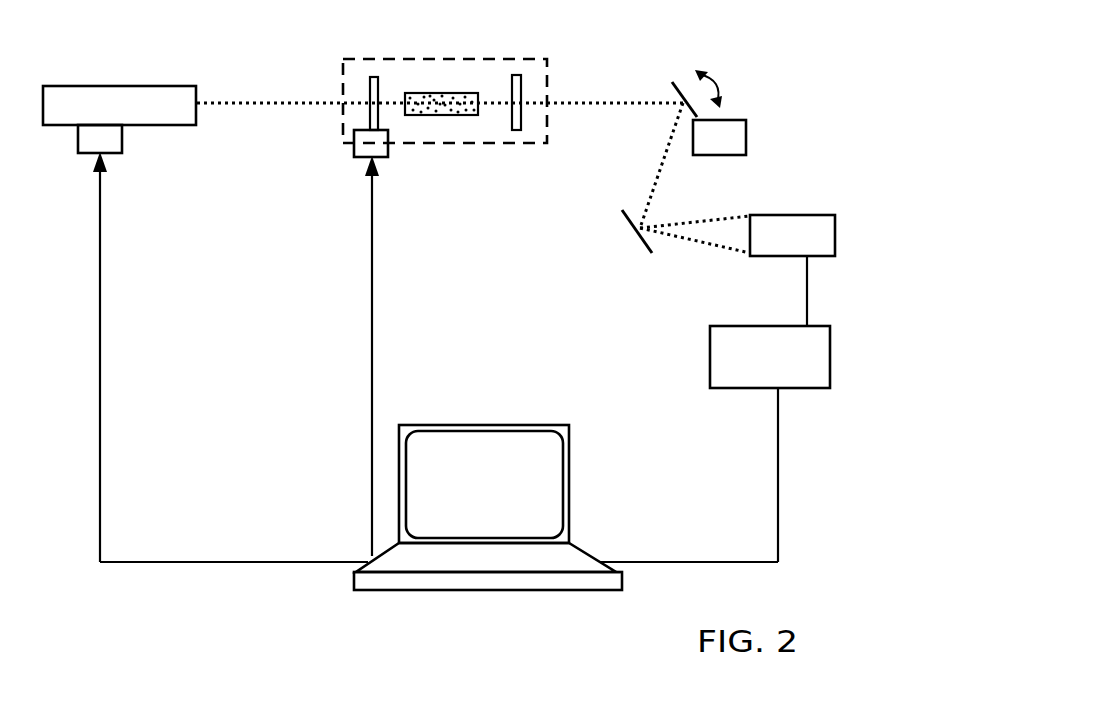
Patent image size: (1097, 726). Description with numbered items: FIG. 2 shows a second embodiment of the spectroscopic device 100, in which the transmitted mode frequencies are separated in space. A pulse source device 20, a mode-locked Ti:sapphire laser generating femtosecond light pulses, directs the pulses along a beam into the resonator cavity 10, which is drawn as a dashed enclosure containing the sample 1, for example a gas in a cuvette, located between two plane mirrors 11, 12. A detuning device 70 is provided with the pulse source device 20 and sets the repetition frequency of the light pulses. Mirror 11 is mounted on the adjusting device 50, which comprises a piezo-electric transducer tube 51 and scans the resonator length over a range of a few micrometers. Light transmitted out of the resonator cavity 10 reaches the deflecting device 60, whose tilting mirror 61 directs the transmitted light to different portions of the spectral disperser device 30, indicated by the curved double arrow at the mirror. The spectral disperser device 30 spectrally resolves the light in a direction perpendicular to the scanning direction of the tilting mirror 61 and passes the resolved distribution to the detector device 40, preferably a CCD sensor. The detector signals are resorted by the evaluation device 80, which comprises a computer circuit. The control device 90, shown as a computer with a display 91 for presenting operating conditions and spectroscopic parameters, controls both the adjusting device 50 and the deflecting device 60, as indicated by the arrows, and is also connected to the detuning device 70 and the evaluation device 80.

The sample 1 is at (460, 92).
The resonator cavity 10 is at (413, 68).
The mirror 11 is at (372, 103).
The mirror 12 is at (520, 120).
The pulse source device 20 is at (78, 121).
The spectral disperser device 30 is at (630, 261).
The detector device 40 is at (786, 250).
The adjusting device 50 is at (352, 192).
The piezo-electric transducer tube 51 is at (390, 150).
The deflecting device 60 is at (681, 71).
The tilting mirror 61 is at (720, 138).
The detuning device 70 is at (160, 167).
The evaluation device 80 is at (753, 363).
The control device 90 is at (392, 562).
The display 91 is at (487, 440).
The spectroscopic device 100 is at (296, 351).